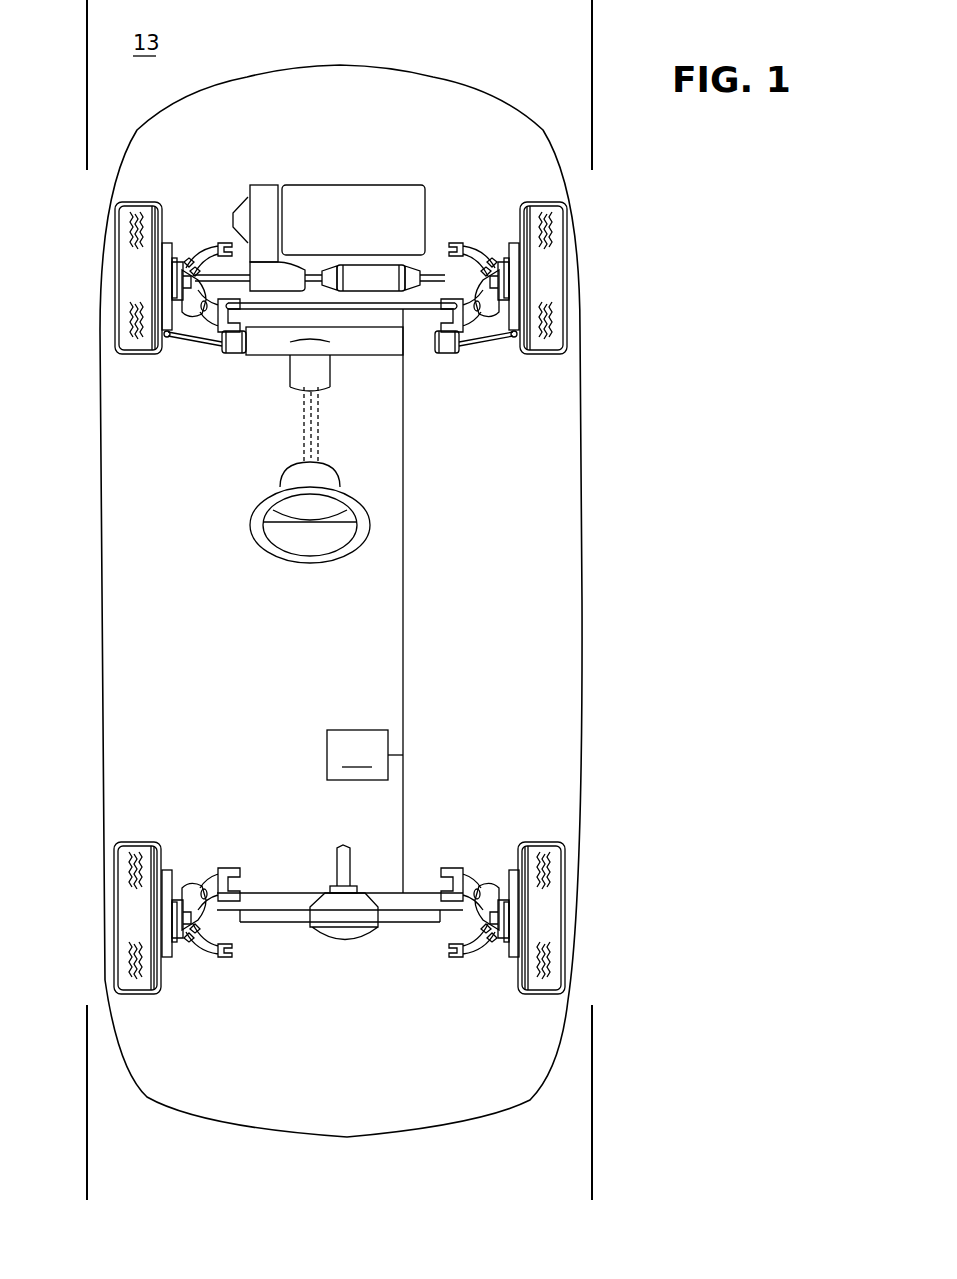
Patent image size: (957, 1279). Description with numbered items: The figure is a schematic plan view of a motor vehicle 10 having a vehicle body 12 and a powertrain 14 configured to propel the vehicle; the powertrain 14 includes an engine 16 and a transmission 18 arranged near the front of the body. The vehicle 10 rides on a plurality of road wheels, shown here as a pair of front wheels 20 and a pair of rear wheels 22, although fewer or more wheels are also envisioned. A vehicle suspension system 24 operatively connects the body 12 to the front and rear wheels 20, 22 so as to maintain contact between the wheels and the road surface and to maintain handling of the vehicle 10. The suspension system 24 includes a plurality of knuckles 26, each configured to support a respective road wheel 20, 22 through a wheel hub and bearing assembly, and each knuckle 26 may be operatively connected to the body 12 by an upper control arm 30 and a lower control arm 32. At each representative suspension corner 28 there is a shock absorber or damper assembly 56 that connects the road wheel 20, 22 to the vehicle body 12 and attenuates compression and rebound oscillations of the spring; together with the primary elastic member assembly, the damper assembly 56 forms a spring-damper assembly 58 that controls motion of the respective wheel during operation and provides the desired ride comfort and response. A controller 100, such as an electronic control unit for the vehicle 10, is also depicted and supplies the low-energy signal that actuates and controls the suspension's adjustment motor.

The motor vehicle 10 is at (602, 470).
The vehicle body 12 is at (584, 603).
The powertrain 14 is at (322, 176).
The engine 16 is at (348, 212).
The transmission 18 is at (262, 195).
The front wheels 20 is at (115, 265).
The rear wheels 22 is at (112, 960).
The vehicle suspension system 24 is at (177, 356).
The knuckle 26 is at (165, 308).
The suspension corner 28 is at (176, 252).
The upper control arm 30 is at (220, 334).
The lower control arm 32 is at (205, 258).
The damper assembly 56 is at (192, 344).
The spring-damper assembly 58 is at (189, 262).
The controller 100 is at (365, 755).